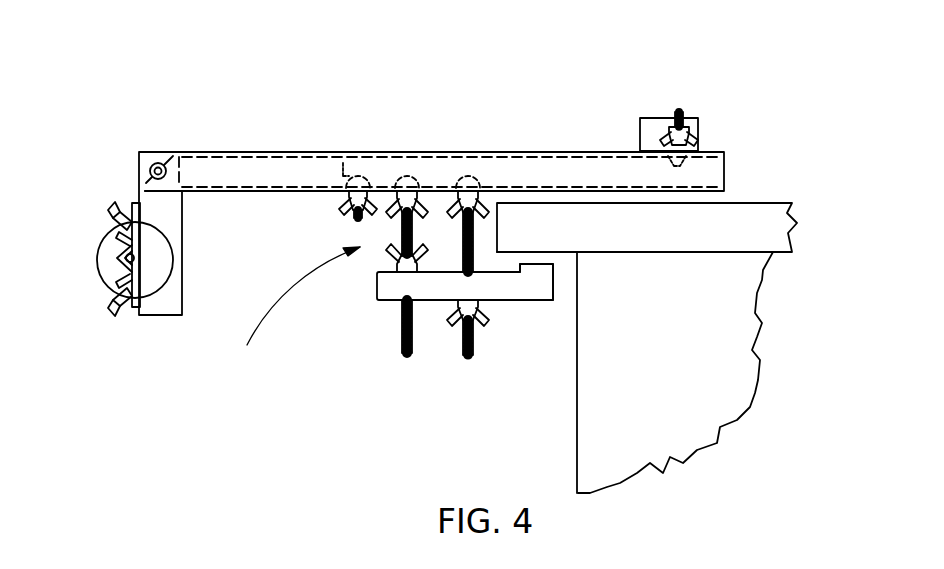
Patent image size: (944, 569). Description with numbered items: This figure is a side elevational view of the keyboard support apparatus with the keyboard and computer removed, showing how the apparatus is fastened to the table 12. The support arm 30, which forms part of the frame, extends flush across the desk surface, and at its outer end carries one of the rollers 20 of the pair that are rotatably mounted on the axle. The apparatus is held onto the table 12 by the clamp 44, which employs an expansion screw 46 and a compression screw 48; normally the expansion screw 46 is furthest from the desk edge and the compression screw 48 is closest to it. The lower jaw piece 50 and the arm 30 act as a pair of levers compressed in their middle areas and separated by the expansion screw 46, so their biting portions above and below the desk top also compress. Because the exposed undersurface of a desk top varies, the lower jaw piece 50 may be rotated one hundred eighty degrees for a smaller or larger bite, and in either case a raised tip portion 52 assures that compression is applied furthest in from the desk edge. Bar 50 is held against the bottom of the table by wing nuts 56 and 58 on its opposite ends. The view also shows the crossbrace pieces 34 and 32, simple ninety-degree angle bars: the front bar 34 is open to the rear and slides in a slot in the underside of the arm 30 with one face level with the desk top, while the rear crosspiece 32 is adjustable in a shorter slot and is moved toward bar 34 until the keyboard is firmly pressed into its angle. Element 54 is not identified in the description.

The table 12 is at (752, 200).
The roller 20 is at (100, 277).
The support arm 30 is at (525, 168).
The rear crosspiece 32 is at (652, 118).
The crossbrace piece 34 is at (350, 166).
The clamp 44 is at (289, 313).
The expansion screw 46 is at (392, 238).
The compression screw 48 is at (457, 240).
The lower jaw piece 50 is at (527, 300).
The raised tip portion 52 is at (560, 267).
The underside edge of workbench 54 is at (507, 248).
The wing nut 56 is at (387, 253).
The wing nut 58 is at (448, 317).